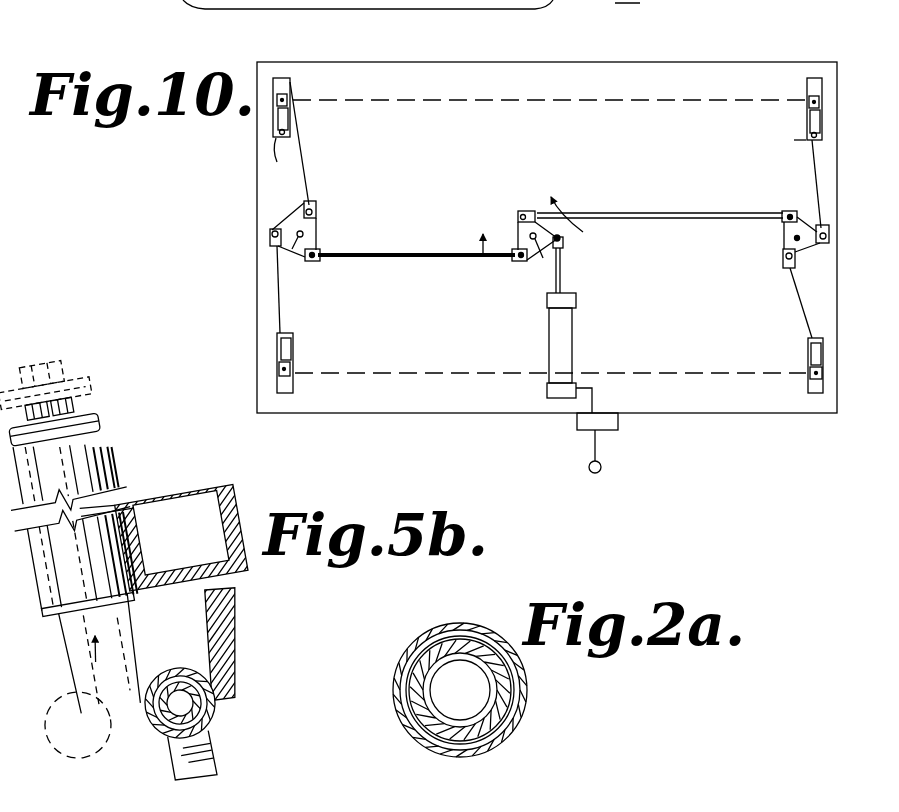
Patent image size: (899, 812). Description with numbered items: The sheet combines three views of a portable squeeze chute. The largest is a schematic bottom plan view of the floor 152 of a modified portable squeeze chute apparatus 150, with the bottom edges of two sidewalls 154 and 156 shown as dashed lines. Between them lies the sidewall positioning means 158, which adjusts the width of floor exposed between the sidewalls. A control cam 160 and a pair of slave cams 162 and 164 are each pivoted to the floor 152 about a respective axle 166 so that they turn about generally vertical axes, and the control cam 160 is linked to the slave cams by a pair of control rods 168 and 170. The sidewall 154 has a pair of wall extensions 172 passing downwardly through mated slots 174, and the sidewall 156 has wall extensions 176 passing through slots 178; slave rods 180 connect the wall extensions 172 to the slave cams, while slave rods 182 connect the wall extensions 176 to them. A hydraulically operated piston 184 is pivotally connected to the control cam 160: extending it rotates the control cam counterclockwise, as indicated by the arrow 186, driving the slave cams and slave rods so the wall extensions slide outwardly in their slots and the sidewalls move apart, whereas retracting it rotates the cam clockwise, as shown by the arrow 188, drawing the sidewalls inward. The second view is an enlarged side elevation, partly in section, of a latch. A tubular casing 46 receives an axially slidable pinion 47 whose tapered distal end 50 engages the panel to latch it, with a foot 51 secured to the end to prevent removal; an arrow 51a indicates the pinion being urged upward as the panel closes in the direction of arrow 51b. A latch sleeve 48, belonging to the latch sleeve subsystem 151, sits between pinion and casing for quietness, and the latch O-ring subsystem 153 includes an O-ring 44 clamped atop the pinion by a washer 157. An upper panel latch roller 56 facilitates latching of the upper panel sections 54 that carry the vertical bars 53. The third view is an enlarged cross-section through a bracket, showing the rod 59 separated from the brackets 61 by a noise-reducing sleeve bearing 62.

In FIG. 10, the floor 152 is at (777, 63).
In FIG. 10, the sidewall 154 is at (596, 101).
In FIG. 10, the sidewall 156 is at (655, 372).
In FIG. 10, the portable squeeze chute apparatus 150 is at (208, 253).
In FIG. 10, the wall extensions 172 is at (291, 98).
In FIG. 10, the slots 174 is at (532, 160).
In FIG. 10, the slave rods 180 is at (304, 180).
In FIG. 10, the slave cam 162 is at (317, 226).
In FIG. 10, the slave cam 164 is at (810, 222).
In FIG. 10, the axle 166 is at (290, 260).
In FIG. 10, the control rod 168 is at (416, 272).
In FIG. 10, the sidewall positioning means 158 is at (641, 220).
In FIG. 10, the control rod 170 is at (630, 212).
In FIG. 10, the control cam 160 is at (515, 226).
In FIG. 10, the slave rods 182 is at (278, 305).
In FIG. 10, the slots 178 is at (292, 346).
In FIG. 10, the wall extensions 176 is at (290, 370).
In FIG. 10, the hydraulically operated piston 184 is at (574, 345).
In FIG. 10, the arrow 186 is at (584, 205).
In FIG. 10, the arrow 188 is at (498, 264).
In FIG. 5B, the casing 46 is at (78, 561).
In FIG. 5B, the latch sleeve subsystem 151 is at (80, 527).
In FIG. 5B, the latch O-ring subsystem 153 is at (106, 418).
In FIG. 5B, the washer 157 is at (97, 412).
In FIG. 5B, the O-ring 44 is at (103, 432).
In FIG. 5B, the latch sleeve 48 is at (125, 605).
In FIG. 5B, the distal end 50 is at (108, 694).
In FIG. 5B, the foot 51 is at (127, 658).
In FIG. 5B, the arrow 51a is at (82, 662).
In FIG. 5B, the arrow 51b is at (128, 717).
In FIG. 5B, the pinion 47 is at (100, 703).
In FIG. 5B, the upper panel latch roller 56 is at (212, 700).
In FIG. 5B, the sections 54 is at (180, 688).
In FIG. 5B, the bars 53 is at (218, 770).
In FIG. 2A, the brackets 61 is at (520, 684).
In FIG. 2A, the sleeve bearings 62 is at (465, 640).
In FIG. 2A, the rod 59 is at (426, 690).